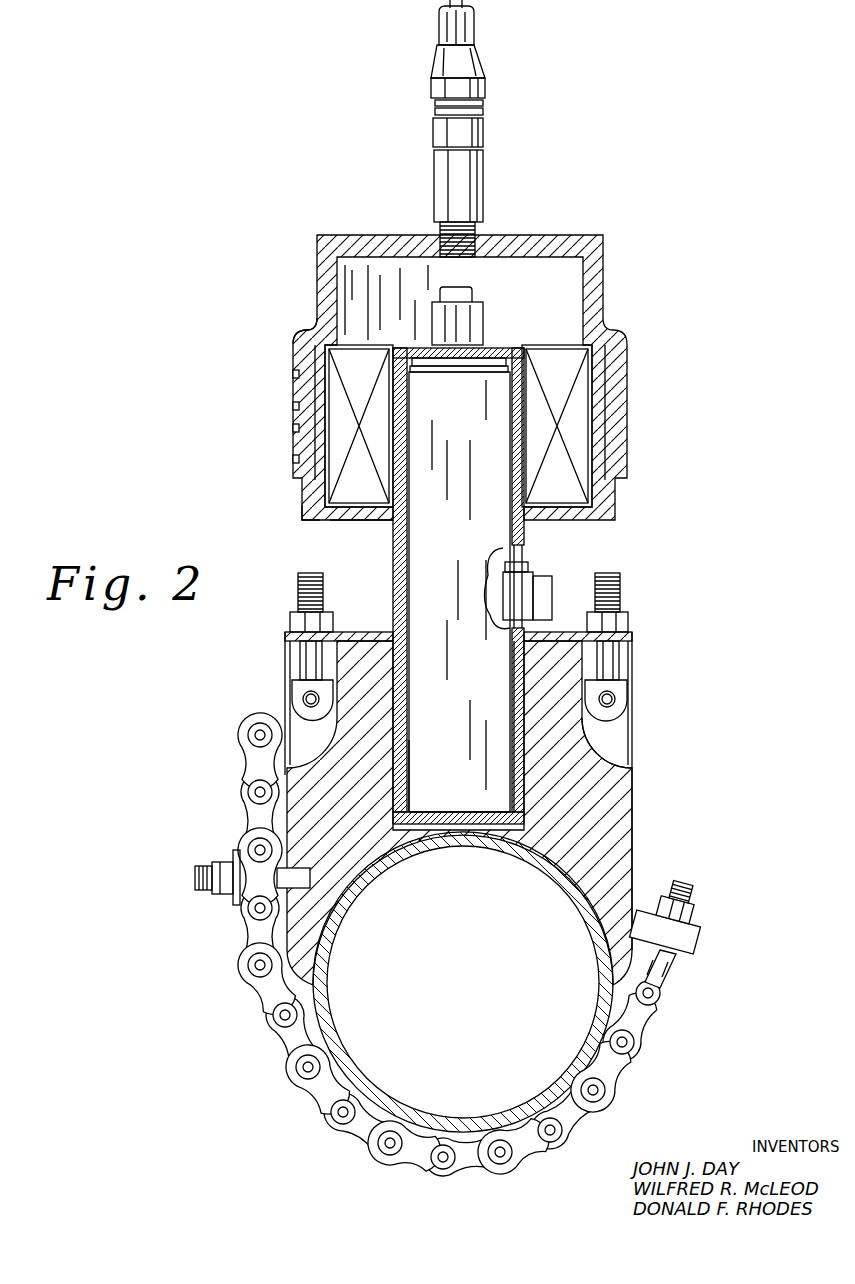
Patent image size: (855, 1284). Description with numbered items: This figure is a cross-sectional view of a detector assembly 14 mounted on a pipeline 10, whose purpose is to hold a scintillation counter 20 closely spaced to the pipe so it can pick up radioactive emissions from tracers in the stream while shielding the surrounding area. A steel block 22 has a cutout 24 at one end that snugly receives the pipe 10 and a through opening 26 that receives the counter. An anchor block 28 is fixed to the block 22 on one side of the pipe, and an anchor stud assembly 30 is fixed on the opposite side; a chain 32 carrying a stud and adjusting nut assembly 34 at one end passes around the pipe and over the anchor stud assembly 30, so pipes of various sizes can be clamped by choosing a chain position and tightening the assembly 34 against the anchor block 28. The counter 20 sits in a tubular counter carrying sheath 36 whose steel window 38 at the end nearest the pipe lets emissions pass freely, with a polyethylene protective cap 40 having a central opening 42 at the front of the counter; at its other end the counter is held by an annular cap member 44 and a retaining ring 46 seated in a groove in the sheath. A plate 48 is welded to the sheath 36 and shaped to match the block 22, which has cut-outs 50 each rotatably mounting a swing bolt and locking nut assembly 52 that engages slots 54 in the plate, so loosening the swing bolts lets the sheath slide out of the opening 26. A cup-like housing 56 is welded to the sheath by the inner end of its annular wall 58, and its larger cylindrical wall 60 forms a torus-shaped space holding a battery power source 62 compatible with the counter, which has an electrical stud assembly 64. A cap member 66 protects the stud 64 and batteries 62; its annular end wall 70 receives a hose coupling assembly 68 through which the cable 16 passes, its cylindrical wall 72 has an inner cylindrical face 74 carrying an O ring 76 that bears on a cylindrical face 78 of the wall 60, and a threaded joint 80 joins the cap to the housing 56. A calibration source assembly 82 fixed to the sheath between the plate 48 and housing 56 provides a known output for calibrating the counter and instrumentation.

The pipeline 10 is at (412, 1172).
The detector assembly 14 is at (368, 816).
The cable 16 is at (418, 57).
The scintillation counter 20 is at (443, 525).
The block 22 is at (612, 831).
The cutout 24 is at (562, 878).
The through opening 26 is at (515, 710).
The anchor block 28 is at (690, 940).
The anchor stud assembly 30 is at (215, 861).
The chain 32 is at (446, 947).
The stud and adjusting nut assembly 34 is at (715, 899).
The counter carrying sheath 36 is at (394, 566).
The window 38 is at (418, 828).
The protective cap 40 is at (410, 786).
The central opening 42 is at (490, 812).
The annular cap member 44 is at (505, 372).
The retaining ring 46 is at (500, 352).
The plate 48 is at (372, 632).
The cut-outs 50 is at (592, 742).
The swing bolt and locking nut assembly 52 is at (649, 647).
The slots 54 is at (287, 640).
The cup-like housing 56 is at (281, 531).
The annular wall 58 is at (362, 522).
The cylindrical wall 60 is at (300, 408).
The power source 62 is at (597, 426).
The electrical stud assembly 64 is at (498, 304).
The cap member 66 is at (423, 375).
The hose coupling assembly 68 is at (409, 131).
The annular end wall 70 is at (398, 243).
The cylindrical wall 72 is at (292, 330).
The inner cylindrical face 74 is at (300, 430).
The O ring 76 is at (300, 458).
The cylindrical face 78 is at (295, 482).
The threaded joint 80 is at (259, 378).
The source assembly 82 is at (551, 580).